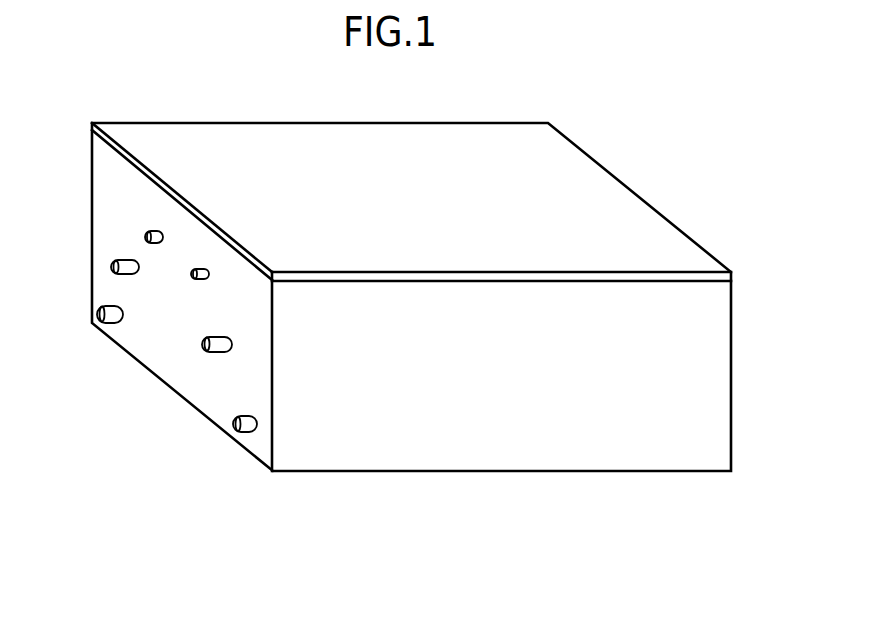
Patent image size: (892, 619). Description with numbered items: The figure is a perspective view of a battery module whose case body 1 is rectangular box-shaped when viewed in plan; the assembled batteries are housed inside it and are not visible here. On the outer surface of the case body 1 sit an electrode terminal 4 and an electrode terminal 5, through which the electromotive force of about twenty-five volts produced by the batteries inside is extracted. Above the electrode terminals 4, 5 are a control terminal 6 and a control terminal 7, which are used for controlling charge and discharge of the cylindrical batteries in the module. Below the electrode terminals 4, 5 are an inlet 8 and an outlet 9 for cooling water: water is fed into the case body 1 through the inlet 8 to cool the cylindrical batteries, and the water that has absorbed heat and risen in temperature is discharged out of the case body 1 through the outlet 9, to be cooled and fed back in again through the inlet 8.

The case body 1 is at (713, 395).
The electrode terminal 4 is at (112, 266).
The electrode terminal 5 is at (214, 352).
The control terminal 6 is at (157, 232).
The control terminal 7 is at (205, 269).
The inlet 8 is at (113, 321).
The outlet 9 is at (247, 433).